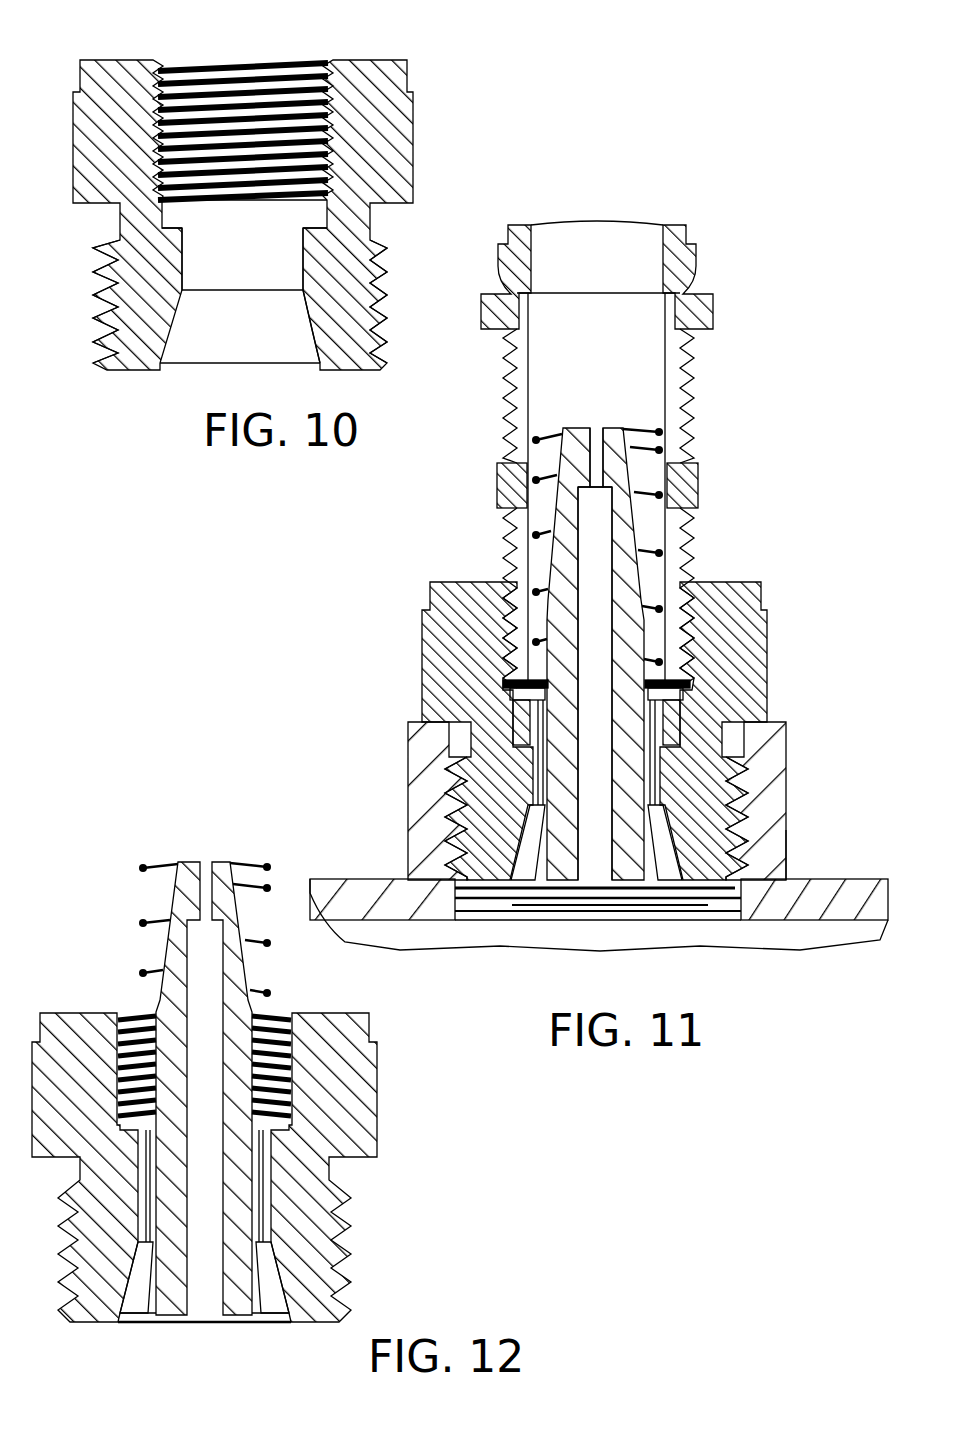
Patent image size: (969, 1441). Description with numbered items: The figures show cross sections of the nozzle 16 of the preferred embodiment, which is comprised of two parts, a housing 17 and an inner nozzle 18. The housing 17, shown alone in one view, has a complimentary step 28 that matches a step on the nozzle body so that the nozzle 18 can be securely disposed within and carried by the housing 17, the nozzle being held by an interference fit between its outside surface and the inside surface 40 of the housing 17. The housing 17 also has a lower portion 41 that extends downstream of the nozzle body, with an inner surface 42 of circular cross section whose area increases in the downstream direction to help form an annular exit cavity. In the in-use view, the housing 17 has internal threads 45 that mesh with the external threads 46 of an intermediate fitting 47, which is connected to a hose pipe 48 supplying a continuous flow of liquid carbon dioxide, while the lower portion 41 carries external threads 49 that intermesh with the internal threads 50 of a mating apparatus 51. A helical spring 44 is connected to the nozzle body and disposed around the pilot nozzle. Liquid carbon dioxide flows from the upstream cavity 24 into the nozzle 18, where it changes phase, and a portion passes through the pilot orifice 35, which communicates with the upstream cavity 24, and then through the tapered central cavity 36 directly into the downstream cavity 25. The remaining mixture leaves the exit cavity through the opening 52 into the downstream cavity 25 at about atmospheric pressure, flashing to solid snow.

In FIG. 11, the nozzle 16 is at (642, 723).
In FIG. 10, the housing 17 is at (360, 73).
In FIG. 11, the housing 17 is at (741, 596).
In FIG. 11, the nozzle 18 is at (571, 930).
In FIG. 11, the upstream cavity 24 is at (582, 490).
In FIG. 11, the downstream cavity 25 is at (641, 900).
In FIG. 10, the complimentary step 28 is at (180, 230).
In FIG. 11, the pilot orifice 35 is at (595, 437).
In FIG. 11, the central cavity 36 is at (608, 530).
In FIG. 10, the inside surface 40 is at (183, 265).
In FIG. 10, the lower portion 41 is at (353, 357).
In FIG. 11, the lower portion 41 is at (620, 801).
In FIG. 10, the inner surface 42 is at (313, 337).
In FIG. 11, the helical spring 44 is at (522, 628).
In FIG. 11, the internal threads 45 is at (490, 583).
In FIG. 11, the external threads 46 is at (505, 548).
In FIG. 11, the intermediate fitting 47 is at (500, 472).
In FIG. 11, the hose pipe 48 is at (498, 266).
In FIG. 11, the external threads 49 is at (745, 773).
In FIG. 11, the internal threads 50 is at (786, 856).
In FIG. 11, the mating apparatus 51 is at (846, 895).
In FIG. 11, the opening 52 is at (516, 887).